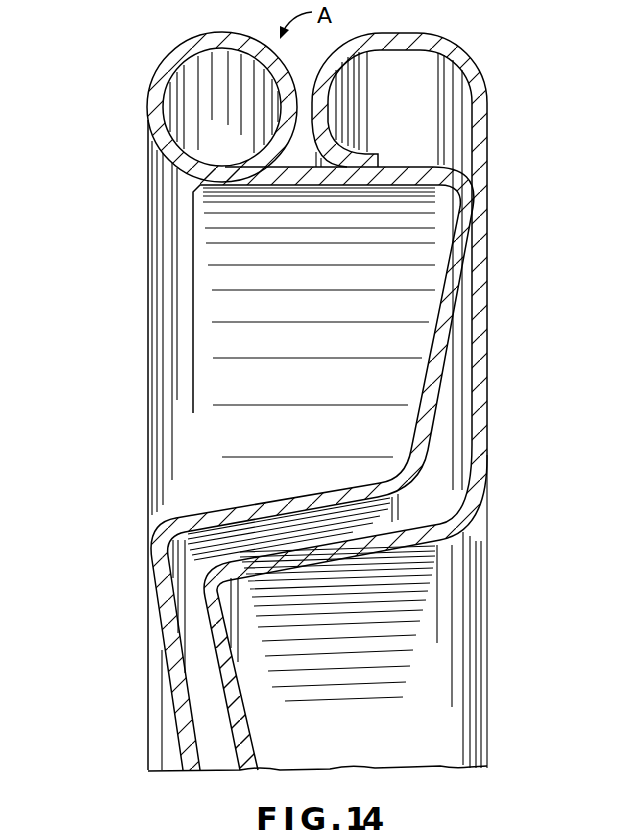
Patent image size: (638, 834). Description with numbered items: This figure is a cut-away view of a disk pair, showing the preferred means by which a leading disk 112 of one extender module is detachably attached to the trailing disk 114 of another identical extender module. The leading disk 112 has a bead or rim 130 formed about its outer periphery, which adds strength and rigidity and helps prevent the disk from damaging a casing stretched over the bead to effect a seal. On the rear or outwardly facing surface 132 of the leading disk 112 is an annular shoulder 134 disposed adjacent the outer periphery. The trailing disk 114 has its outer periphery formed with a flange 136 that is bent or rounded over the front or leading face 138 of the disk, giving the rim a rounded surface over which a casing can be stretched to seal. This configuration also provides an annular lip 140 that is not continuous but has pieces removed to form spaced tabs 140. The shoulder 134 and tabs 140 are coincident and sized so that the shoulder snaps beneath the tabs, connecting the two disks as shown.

The leading disk 112 is at (137, 637).
The trailing disk 114 is at (260, 731).
The bead or rim 130 is at (194, 37).
The rear or outwardly facing surface 132 is at (187, 686).
The annular shoulder 134 is at (432, 340).
The flange 136 is at (458, 46).
The front or leading face 138 is at (214, 666).
The annular lip / tabs 140 is at (364, 152).